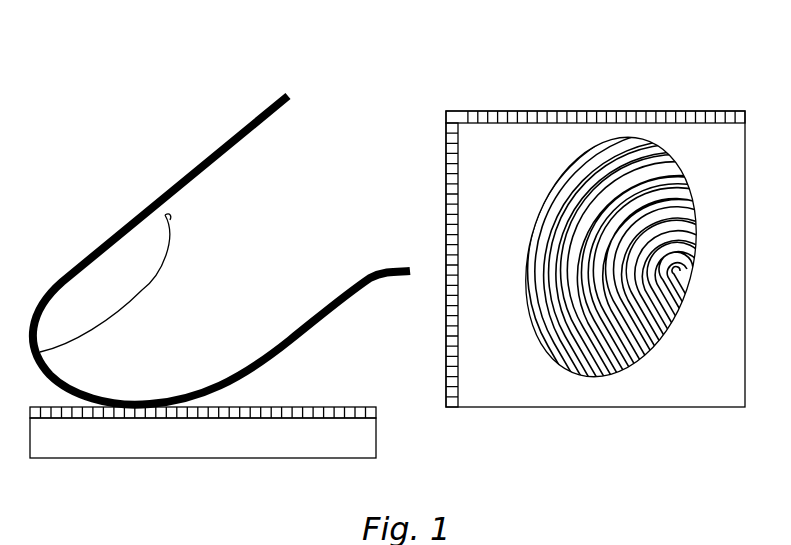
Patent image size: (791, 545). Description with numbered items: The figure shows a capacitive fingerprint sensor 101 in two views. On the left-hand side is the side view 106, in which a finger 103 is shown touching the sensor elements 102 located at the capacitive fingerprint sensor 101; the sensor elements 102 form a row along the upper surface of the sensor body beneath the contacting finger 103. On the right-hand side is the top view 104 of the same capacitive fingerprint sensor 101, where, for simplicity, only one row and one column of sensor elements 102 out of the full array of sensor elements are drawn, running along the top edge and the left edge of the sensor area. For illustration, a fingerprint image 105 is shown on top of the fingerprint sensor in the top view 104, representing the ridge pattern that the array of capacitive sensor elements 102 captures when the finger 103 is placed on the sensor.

The capacitive fingerprint sensor 101 is at (103, 458).
The sensor elements 102 is at (266, 407).
The finger 103 is at (177, 186).
The top view 104 is at (668, 85).
The fingerprint image 105 is at (645, 348).
The side view 106 is at (250, 85).